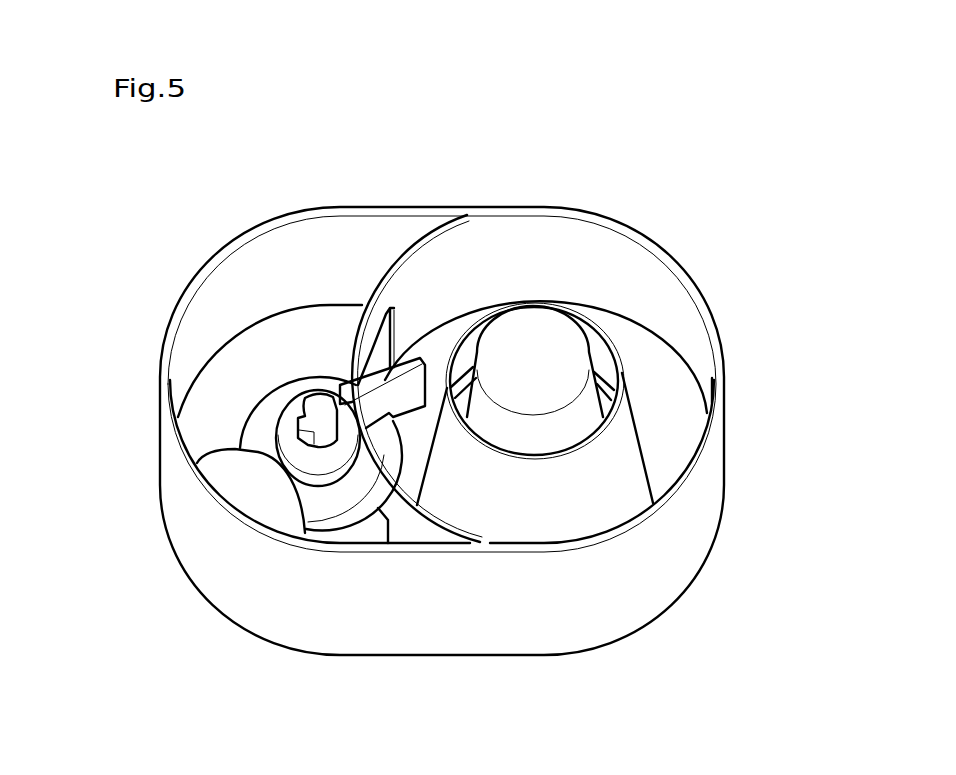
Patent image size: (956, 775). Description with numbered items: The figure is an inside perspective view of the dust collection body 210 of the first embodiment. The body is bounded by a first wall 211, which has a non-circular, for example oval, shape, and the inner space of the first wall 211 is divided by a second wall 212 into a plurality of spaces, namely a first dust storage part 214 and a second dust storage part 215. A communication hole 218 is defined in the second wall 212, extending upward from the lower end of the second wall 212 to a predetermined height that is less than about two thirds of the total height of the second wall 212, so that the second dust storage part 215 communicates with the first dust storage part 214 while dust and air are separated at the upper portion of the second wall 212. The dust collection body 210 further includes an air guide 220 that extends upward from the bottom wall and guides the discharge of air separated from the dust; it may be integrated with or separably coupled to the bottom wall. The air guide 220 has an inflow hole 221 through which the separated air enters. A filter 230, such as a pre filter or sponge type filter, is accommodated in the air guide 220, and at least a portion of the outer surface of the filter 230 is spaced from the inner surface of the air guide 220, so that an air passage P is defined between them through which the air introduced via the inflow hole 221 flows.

The dust collection body 210 is at (204, 242).
The first wall 211 is at (313, 238).
The second wall 212 is at (378, 345).
The first dust storage part 214 is at (262, 370).
The second dust storage part 215 is at (648, 348).
The communication hole 218 is at (392, 326).
The air guide 220 is at (538, 515).
The inflow hole 221 is at (605, 362).
The filter 230 is at (535, 345).
The air passage P is at (607, 358).